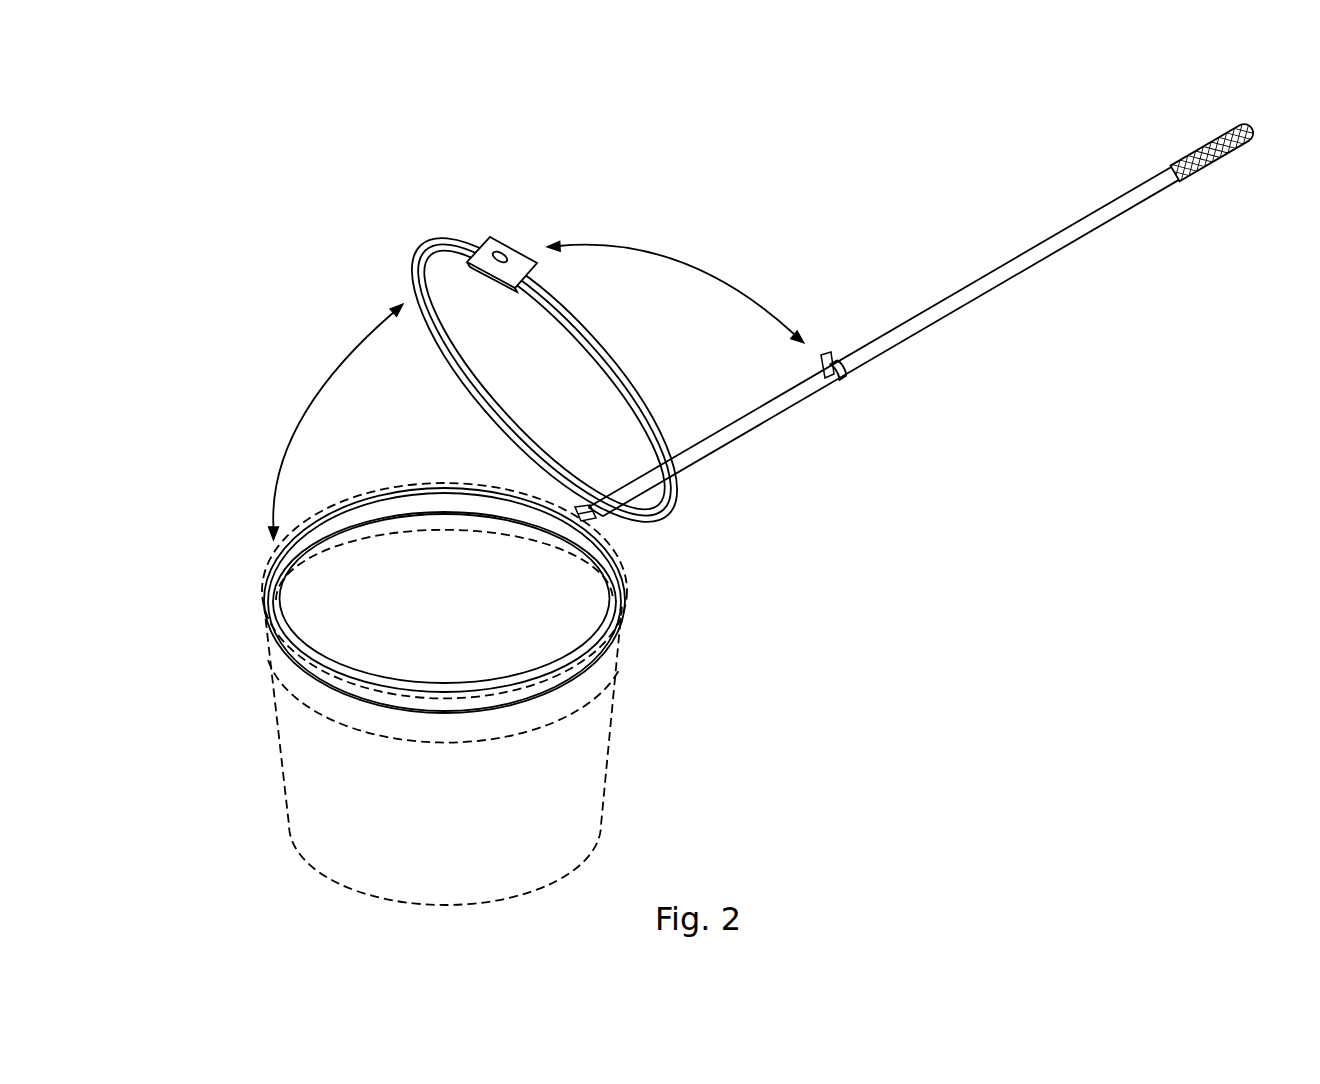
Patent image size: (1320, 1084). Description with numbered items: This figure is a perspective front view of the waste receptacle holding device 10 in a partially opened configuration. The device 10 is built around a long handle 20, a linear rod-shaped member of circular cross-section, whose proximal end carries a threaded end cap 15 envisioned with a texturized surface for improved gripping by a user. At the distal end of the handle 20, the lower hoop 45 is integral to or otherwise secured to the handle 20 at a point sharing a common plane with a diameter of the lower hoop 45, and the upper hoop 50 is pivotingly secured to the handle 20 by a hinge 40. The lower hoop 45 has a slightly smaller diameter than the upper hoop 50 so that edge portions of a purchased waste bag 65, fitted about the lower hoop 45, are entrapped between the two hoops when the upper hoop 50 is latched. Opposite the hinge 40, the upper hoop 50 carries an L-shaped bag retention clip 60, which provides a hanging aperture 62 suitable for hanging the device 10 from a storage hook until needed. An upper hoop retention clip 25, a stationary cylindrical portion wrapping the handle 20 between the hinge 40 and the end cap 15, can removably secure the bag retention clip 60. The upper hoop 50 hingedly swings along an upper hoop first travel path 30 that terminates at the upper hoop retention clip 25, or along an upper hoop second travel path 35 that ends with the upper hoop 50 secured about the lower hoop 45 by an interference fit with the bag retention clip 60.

The waste receptacle holding device 10 is at (236, 244).
The end cap 15 is at (1228, 160).
The handle 20 is at (1090, 213).
The upper hoop retention clip 25 is at (833, 353).
The upper hoop first travel path 30 is at (693, 270).
The upper hoop second travel path 35 is at (315, 403).
The hinge 40 is at (597, 520).
The lower hoop 45 is at (607, 622).
The upper hoop 50 is at (416, 265).
The bag retention clip 60 is at (496, 200).
The hanging aperture 62 is at (499, 252).
The waste bag 65 is at (553, 783).